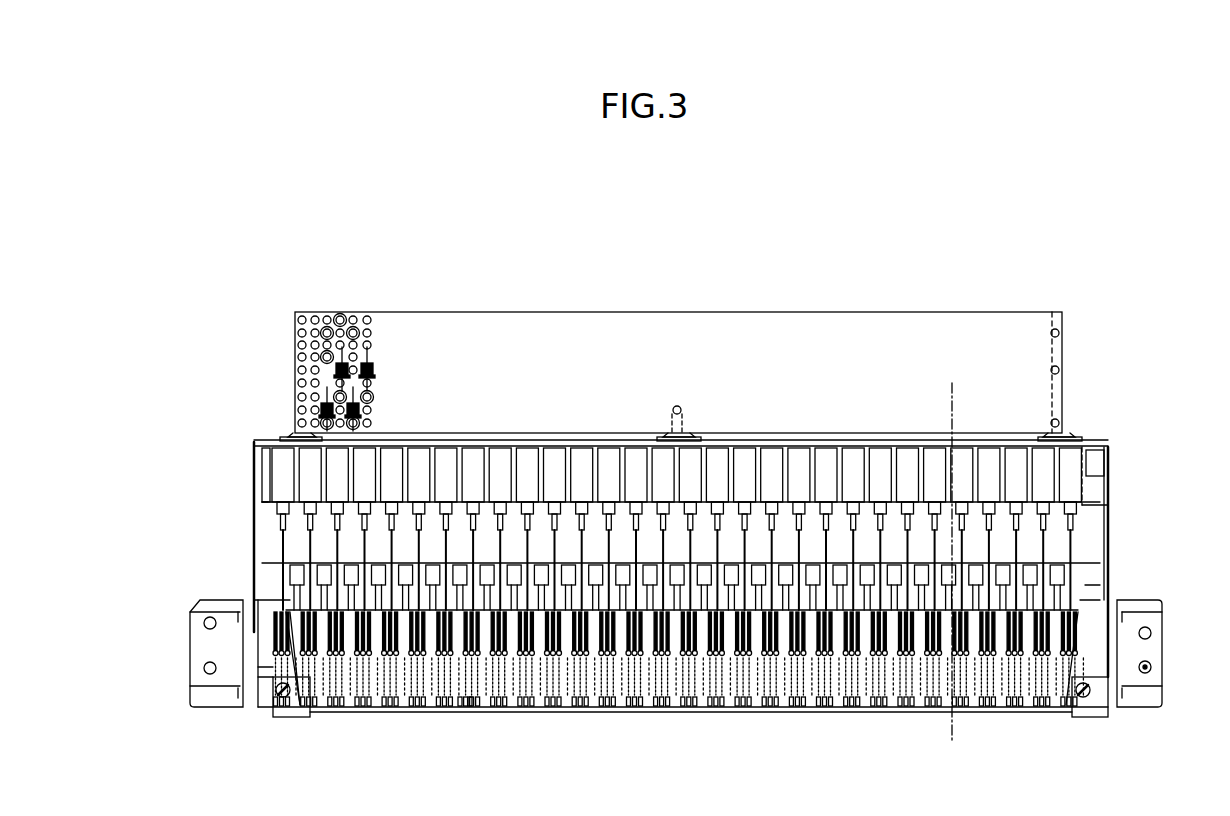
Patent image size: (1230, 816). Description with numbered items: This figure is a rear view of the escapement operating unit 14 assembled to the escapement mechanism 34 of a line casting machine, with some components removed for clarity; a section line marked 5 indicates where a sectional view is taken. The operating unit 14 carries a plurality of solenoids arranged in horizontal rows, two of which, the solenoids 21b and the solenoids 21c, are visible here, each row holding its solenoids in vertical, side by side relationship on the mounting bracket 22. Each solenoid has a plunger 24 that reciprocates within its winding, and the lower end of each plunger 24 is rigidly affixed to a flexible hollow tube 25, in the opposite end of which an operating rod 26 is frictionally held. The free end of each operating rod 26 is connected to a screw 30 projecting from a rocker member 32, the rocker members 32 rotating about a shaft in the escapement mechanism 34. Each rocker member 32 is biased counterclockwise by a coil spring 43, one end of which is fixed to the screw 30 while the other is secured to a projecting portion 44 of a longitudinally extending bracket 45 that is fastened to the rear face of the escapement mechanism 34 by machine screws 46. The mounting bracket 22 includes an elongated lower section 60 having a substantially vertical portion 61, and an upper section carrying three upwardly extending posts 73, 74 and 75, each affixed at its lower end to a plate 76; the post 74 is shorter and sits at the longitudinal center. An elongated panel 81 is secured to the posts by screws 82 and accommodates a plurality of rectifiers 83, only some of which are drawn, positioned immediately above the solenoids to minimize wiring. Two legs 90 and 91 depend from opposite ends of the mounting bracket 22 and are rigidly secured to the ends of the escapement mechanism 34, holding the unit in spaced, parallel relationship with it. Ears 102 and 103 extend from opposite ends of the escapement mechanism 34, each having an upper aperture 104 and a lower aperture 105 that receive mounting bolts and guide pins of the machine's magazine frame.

The operating unit 14 is at (717, 757).
The mounting bracket 22 is at (252, 447).
The solenoids 21b is at (305, 464).
The solenoids 21c is at (320, 552).
The plunger 24 is at (1088, 566).
The hollow tube 25 is at (1086, 586).
The operating rod 26 is at (1080, 601).
The screw 30 is at (298, 707).
The rocker member 32 is at (290, 637).
The escapement mechanism 34 is at (620, 714).
The coil spring 43 is at (452, 707).
The projecting portion 44 is at (482, 707).
The bracket 45 is at (1092, 702).
The machine screws 46 is at (278, 696).
The lower section 60 is at (1110, 447).
The portion 61 is at (262, 490).
The post 73 is at (288, 436).
The post 74 is at (688, 436).
The post 75 is at (1065, 435).
The plates 76 is at (298, 436).
The panel 81 is at (605, 312).
The screws 82 is at (297, 423).
The rectifiers 83 is at (348, 362).
The leg 90 is at (254, 522).
The leg 91 is at (1110, 522).
The ear 102 is at (1165, 650).
The ear 103 is at (190, 648).
The upper aperture 104 is at (204, 622).
The lower aperture 105 is at (204, 668).
The section line 5- 5 is at (952, 383).